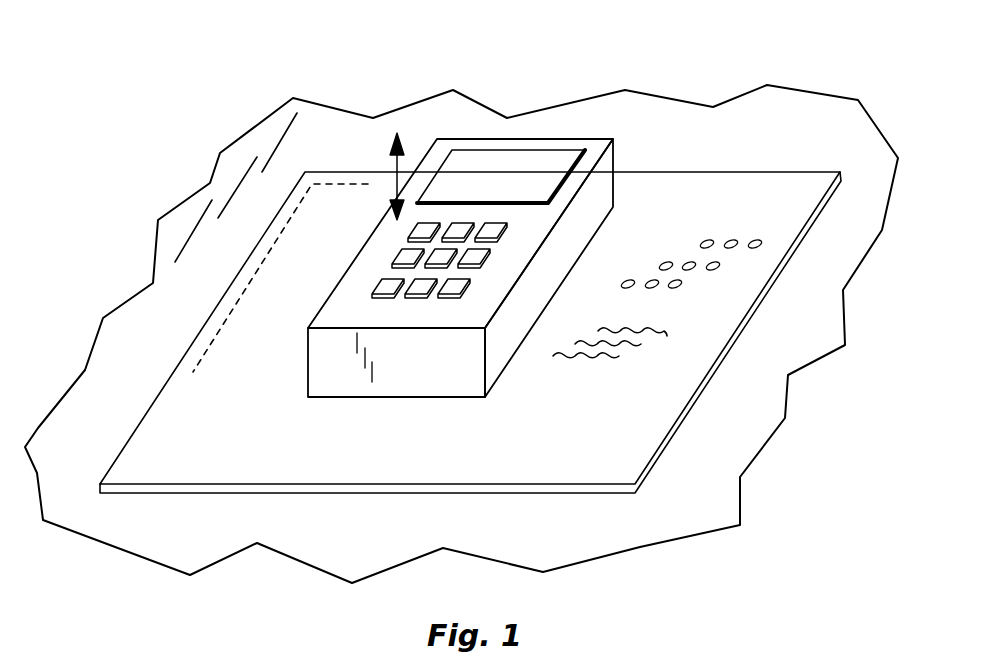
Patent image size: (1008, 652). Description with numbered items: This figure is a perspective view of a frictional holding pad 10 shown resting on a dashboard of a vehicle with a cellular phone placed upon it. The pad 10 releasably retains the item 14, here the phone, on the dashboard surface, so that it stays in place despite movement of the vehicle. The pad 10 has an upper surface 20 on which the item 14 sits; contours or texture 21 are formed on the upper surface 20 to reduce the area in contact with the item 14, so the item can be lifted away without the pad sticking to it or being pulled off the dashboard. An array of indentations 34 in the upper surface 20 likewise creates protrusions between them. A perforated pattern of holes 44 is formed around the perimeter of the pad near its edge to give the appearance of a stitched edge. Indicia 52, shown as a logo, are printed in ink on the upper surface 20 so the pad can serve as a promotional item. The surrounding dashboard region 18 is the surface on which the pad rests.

The frictional holding pad 10 is at (464, 331).
The item 14 is at (545, 120).
The support surface 18 is at (187, 543).
The upper surface 20 is at (603, 430).
The contours or texture 21 is at (650, 347).
The indentations 34 is at (717, 272).
The holes 44 is at (285, 225).
The indicia 52 is at (193, 470).